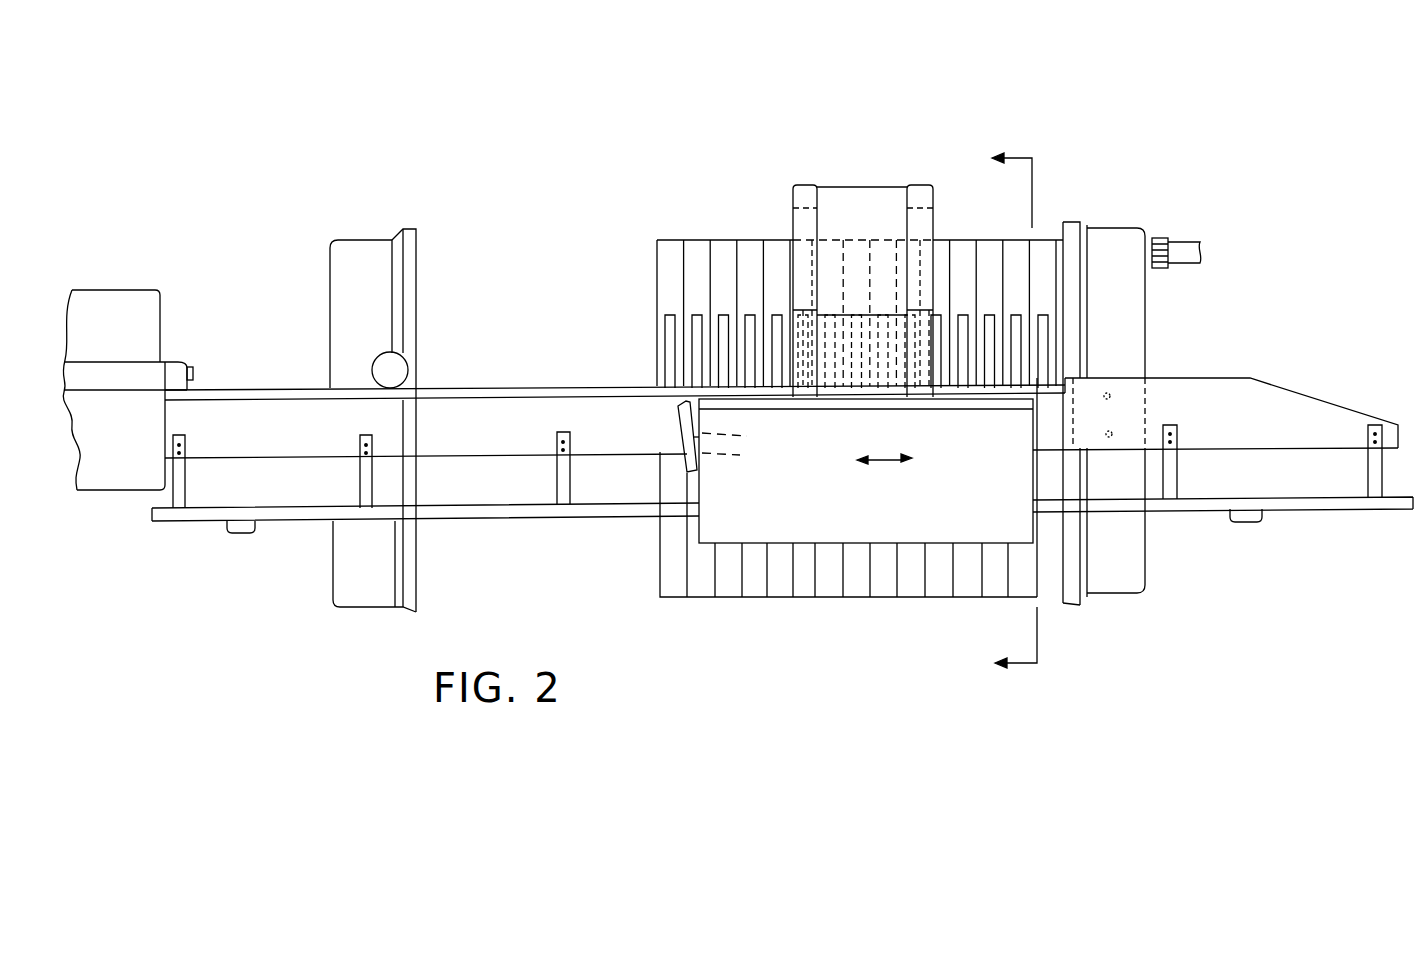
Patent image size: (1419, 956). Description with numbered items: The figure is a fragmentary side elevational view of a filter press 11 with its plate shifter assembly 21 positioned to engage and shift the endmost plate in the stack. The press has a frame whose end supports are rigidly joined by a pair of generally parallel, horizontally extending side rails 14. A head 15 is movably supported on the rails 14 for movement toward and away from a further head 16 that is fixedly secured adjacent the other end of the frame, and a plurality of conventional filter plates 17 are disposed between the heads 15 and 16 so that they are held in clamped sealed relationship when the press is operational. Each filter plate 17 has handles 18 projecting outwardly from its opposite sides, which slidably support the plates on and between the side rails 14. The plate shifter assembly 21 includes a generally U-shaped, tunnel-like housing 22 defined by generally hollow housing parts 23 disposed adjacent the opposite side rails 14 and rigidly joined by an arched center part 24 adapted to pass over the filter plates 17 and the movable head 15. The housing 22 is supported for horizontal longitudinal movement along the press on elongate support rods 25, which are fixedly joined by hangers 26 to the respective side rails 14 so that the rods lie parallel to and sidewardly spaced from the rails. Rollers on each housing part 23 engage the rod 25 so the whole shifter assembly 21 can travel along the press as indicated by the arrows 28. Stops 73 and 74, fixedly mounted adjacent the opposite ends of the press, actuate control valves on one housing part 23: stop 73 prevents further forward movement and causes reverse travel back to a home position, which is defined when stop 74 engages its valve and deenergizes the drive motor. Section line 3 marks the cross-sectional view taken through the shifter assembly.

The filter press 11 is at (518, 184).
The side rails 14 is at (486, 392).
The head 15 is at (342, 260).
The further head 16 is at (1125, 305).
The filter plates 17 is at (724, 248).
The handles 18 is at (698, 330).
The plate shifter assembly 21 is at (813, 158).
The housing 22 is at (934, 212).
The housing parts 23 is at (903, 527).
The arched center part 24 is at (858, 202).
The support rods 25 is at (500, 512).
The hangers 26 is at (567, 490).
The arrows 28 is at (890, 462).
The section line 3- 3 is at (997, 412).
The stop 73 is at (1248, 515).
The stop 74 is at (239, 533).